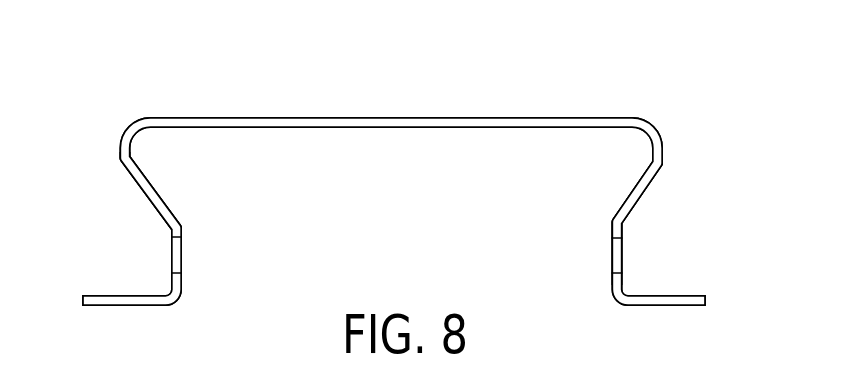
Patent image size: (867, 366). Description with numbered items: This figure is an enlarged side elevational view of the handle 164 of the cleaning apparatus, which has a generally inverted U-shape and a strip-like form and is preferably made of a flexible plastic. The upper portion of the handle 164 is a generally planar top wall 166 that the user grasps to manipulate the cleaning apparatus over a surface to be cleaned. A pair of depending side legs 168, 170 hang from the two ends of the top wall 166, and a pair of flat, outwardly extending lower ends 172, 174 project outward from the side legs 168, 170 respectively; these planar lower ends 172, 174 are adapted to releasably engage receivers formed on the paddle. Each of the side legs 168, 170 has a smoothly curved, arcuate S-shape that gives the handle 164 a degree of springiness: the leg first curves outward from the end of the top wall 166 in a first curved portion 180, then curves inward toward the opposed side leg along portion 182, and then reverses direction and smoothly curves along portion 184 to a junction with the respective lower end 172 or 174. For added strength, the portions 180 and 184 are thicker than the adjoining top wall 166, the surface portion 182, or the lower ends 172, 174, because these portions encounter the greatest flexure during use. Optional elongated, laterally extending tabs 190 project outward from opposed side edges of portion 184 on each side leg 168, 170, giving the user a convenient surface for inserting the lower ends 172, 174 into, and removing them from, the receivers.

The handle 164 is at (590, 50).
The top wall 166 is at (462, 117).
The side leg 168 is at (122, 190).
The side leg 170 is at (684, 167).
The lower end 172 is at (123, 293).
The lower end 174 is at (655, 297).
The first curved portion 180 is at (122, 147).
The portion 182 is at (161, 204).
The portion 184 is at (183, 293).
The tabs 190 is at (183, 246).